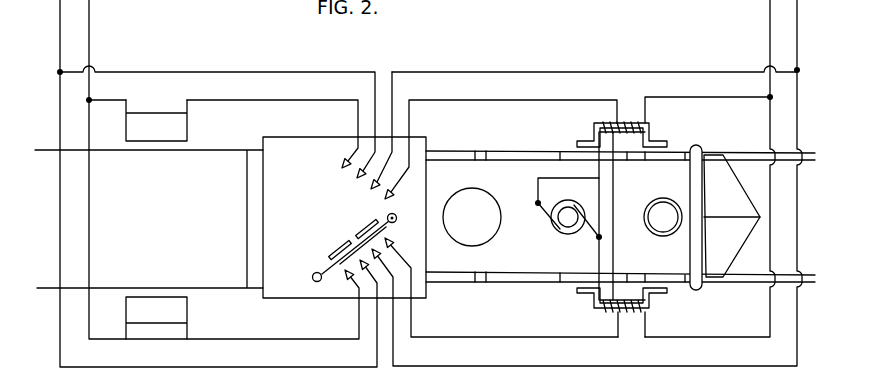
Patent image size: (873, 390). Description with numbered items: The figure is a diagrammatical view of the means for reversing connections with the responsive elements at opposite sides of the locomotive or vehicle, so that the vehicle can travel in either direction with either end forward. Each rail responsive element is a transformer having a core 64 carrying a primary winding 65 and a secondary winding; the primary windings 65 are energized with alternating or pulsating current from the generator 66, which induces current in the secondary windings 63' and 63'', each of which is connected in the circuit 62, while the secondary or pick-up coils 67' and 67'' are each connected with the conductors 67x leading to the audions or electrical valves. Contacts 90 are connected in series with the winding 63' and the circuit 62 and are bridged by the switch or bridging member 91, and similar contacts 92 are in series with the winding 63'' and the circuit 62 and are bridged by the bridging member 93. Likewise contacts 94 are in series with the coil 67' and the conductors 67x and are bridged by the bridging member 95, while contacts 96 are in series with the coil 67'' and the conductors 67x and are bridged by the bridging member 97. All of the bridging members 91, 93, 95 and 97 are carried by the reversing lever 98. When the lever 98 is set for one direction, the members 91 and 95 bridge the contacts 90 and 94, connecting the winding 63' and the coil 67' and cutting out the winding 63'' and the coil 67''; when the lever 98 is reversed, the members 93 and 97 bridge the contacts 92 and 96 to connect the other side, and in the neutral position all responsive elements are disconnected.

The circuit 62 is at (797, 42).
The secondary winding 63'' is at (622, 188).
The secondary winding 63' is at (624, 330).
The core 64 is at (690, 311).
The primary winding 65 is at (600, 123).
The generator 66 is at (556, 225).
The conductors 67x is at (60, 30).
The pick-up coil 67'' is at (156, 115).
The pick-up coil 67' is at (156, 329).
The contacts 90 is at (380, 253).
The bridging member 91 is at (391, 237).
The contacts 92 is at (389, 197).
The bridging member 93 is at (362, 227).
The contacts 94 is at (364, 270).
The bridging member 95 is at (317, 280).
The contacts 96 is at (356, 177).
The bridging member 97 is at (334, 249).
The reversing lever 98 is at (316, 273).